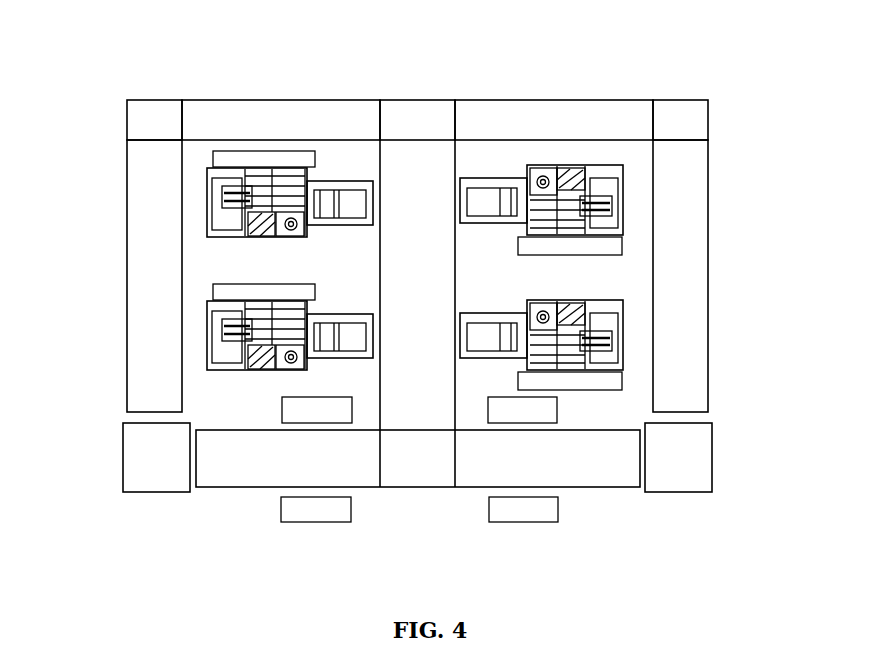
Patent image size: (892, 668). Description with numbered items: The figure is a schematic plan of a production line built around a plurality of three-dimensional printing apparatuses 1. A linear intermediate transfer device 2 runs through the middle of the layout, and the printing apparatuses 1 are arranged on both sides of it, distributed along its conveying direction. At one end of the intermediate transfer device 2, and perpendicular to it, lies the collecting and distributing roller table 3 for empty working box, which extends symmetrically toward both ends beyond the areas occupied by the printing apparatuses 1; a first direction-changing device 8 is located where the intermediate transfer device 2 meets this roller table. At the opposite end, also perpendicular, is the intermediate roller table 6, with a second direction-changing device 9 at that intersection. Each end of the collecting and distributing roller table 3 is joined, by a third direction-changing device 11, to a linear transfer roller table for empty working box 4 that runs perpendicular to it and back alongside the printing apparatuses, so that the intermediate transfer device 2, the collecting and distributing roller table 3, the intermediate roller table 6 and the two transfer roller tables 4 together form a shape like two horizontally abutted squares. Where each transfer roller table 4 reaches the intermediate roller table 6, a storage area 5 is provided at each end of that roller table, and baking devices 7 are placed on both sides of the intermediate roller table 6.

The 3D printing apparatus 1 is at (467, 206).
The intermediate transfer device 2 is at (458, 226).
The collecting and distributing roller table for empty working box 3 is at (417, 81).
The transfer roller table for empty working box 4 is at (435, 276).
The storage area 5 is at (461, 497).
The intermediate roller table 6 is at (456, 500).
The baking device 7 is at (347, 508).
The first direction-changing device 8 is at (427, 81).
The second direction-changing device 9 is at (446, 497).
The third direction-changing device 11 is at (471, 81).